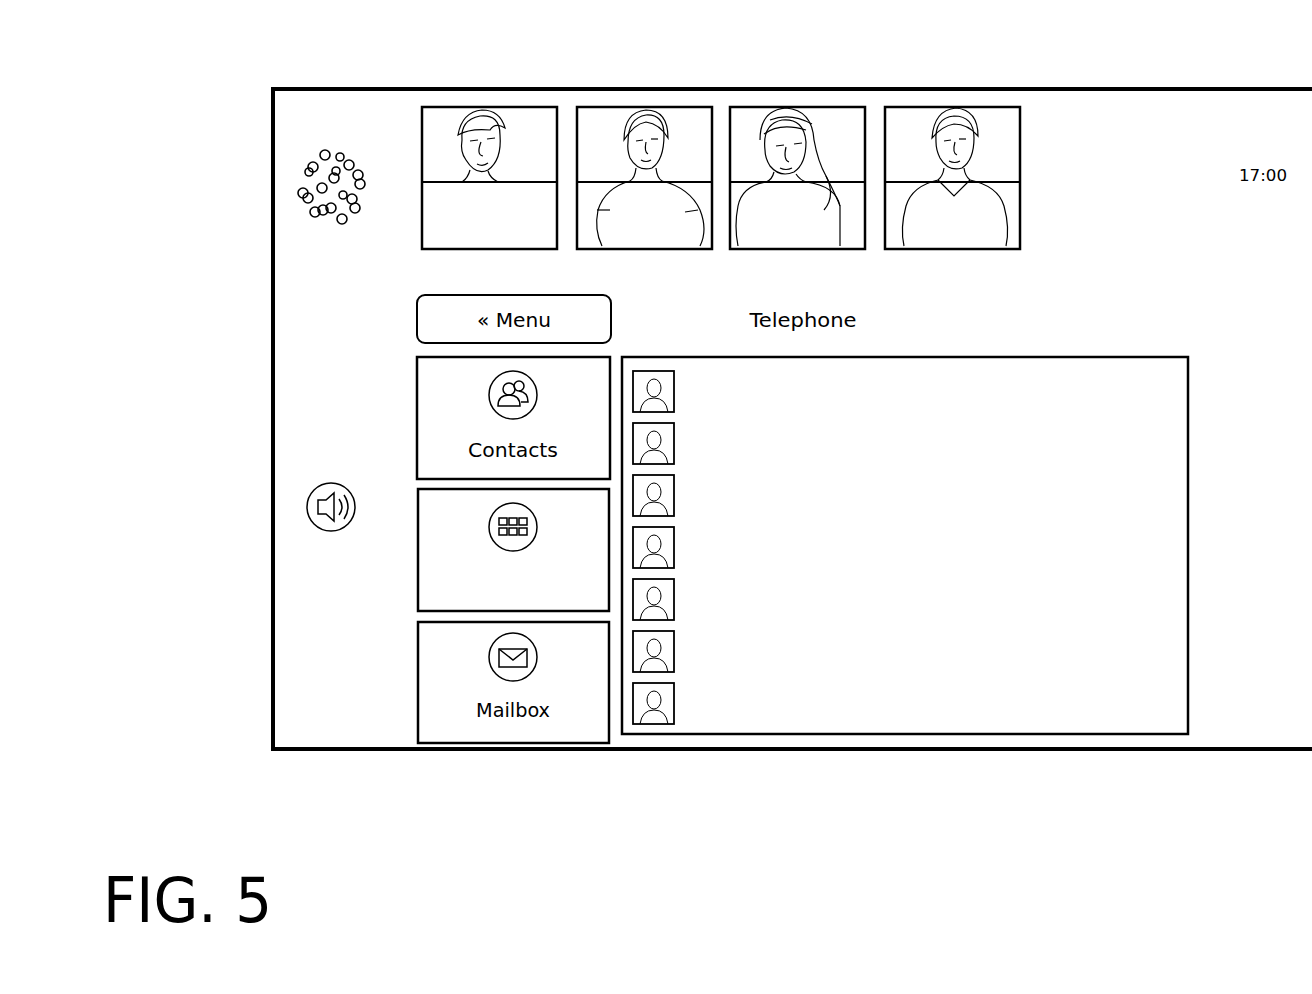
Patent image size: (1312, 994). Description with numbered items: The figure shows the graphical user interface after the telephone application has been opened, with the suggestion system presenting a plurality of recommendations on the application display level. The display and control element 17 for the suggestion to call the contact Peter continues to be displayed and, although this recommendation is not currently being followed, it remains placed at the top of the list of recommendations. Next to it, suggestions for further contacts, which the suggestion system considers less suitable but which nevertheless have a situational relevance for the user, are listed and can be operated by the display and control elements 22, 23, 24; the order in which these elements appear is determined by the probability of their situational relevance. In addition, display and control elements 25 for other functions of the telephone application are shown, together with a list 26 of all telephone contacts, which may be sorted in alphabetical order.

The display and control element 17 is at (535, 107).
The display and control element 22 is at (683, 107).
The display and control element 23 is at (846, 107).
The display and control element 24 is at (993, 107).
The display and control elements 25 is at (440, 598).
The list 26 is at (749, 675).